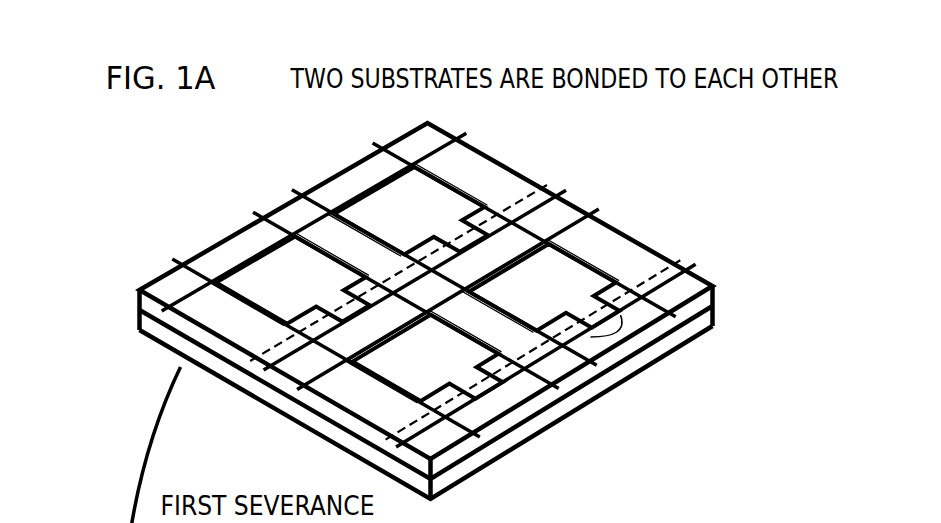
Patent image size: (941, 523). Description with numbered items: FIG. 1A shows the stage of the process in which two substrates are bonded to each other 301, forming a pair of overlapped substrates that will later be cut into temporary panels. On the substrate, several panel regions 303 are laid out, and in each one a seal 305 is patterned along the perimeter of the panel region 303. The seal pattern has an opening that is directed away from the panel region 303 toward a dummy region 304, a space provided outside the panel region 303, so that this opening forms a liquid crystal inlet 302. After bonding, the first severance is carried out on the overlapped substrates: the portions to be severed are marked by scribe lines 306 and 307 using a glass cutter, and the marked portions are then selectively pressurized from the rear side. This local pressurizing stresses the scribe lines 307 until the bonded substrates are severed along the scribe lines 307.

The bonded substrates 301 is at (426, 281).
The liquid crystal inlet 302 is at (628, 340).
The panel region 303 is at (560, 267).
The dummy region 304 is at (627, 298).
The seal 305 is at (578, 260).
The scribe line 306 is at (485, 291).
The scribe line 307 is at (435, 274).